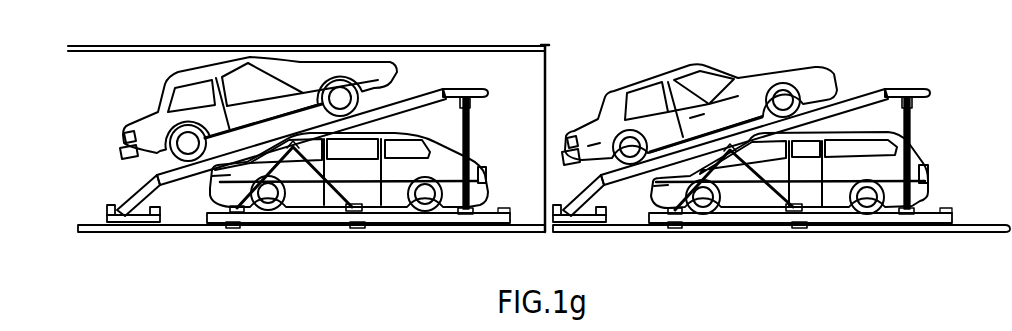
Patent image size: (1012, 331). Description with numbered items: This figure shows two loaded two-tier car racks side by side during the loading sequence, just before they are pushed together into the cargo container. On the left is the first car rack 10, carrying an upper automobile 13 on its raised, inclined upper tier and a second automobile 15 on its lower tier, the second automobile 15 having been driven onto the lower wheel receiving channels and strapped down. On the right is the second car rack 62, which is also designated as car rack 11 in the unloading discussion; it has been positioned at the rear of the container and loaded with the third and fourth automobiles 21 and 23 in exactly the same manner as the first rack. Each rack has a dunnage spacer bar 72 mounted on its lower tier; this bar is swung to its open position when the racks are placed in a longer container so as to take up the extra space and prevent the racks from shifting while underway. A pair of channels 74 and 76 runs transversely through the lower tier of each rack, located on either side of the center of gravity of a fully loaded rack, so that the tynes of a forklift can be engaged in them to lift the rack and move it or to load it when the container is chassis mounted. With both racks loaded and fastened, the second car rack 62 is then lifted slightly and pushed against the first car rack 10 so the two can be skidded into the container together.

The car rack 10 is at (459, 89).
The car rack 11 is at (908, 94).
The upper vehicle on first unit 13 is at (174, 77).
The second automobile 15 is at (486, 166).
The third automobile 21 is at (796, 66).
The fourth automobile 23 is at (823, 199).
The second car rack 62 is at (862, 217).
The dunnage spacer bar 72 is at (116, 208).
The channel 74 is at (231, 229).
The channel 76 is at (354, 229).